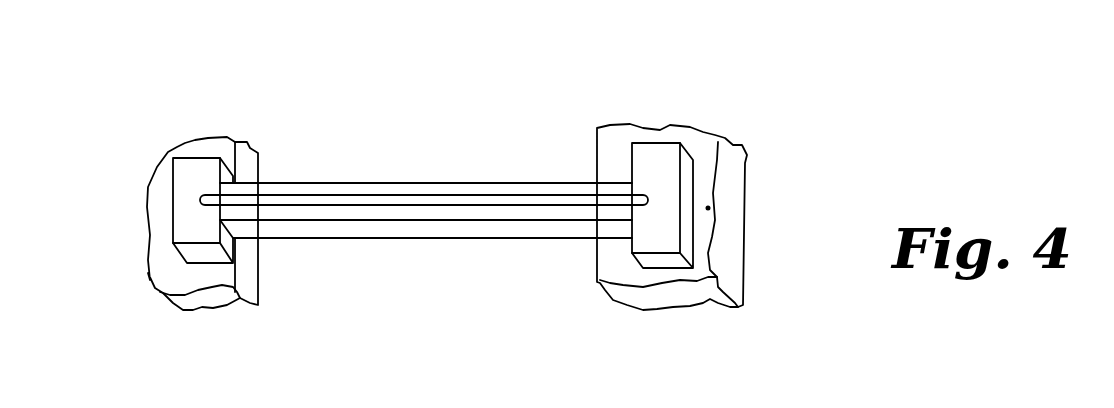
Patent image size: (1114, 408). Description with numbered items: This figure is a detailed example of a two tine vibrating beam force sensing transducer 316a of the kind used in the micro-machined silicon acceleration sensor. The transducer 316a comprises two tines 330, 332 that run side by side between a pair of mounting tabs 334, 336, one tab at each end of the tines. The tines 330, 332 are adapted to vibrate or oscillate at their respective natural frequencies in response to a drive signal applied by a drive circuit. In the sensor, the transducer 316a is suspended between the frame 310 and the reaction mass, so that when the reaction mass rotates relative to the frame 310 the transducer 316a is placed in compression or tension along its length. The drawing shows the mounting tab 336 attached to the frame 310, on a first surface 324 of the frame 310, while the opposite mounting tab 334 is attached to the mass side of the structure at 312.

The force sensing transducer 316a is at (394, 205).
The tine 332 is at (392, 183).
The tine 330 is at (392, 211).
The mounting tab 334 is at (176, 192).
The mounting tab 336 is at (661, 242).
The left plate 312 is at (165, 283).
The frame 310 is at (714, 298).
The first surface 324 is at (708, 208).